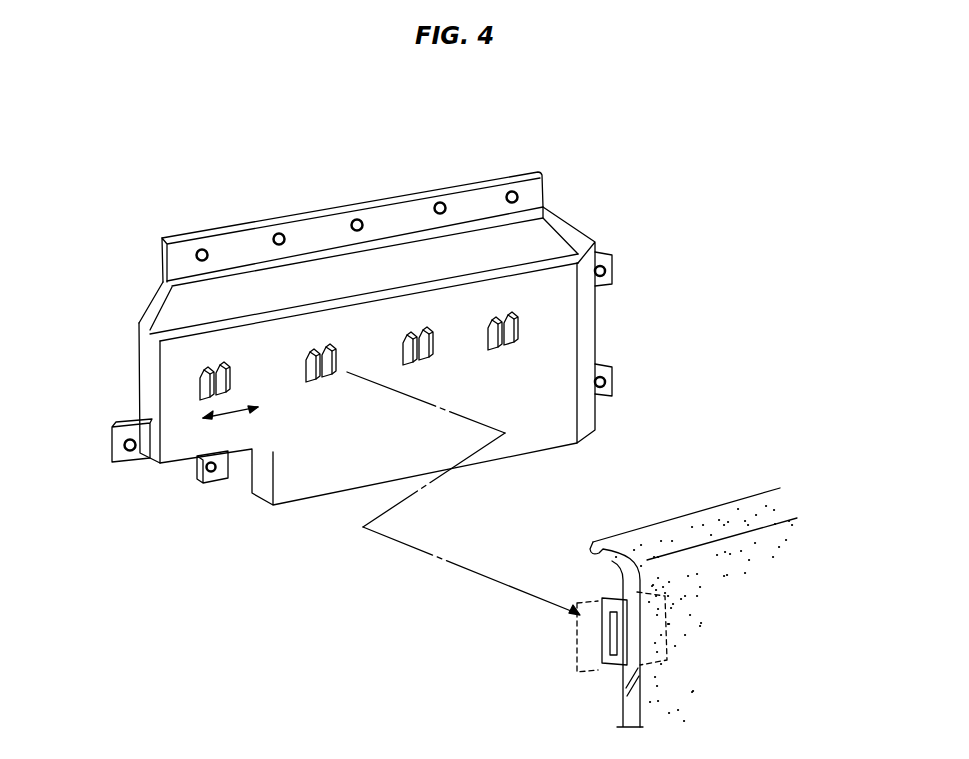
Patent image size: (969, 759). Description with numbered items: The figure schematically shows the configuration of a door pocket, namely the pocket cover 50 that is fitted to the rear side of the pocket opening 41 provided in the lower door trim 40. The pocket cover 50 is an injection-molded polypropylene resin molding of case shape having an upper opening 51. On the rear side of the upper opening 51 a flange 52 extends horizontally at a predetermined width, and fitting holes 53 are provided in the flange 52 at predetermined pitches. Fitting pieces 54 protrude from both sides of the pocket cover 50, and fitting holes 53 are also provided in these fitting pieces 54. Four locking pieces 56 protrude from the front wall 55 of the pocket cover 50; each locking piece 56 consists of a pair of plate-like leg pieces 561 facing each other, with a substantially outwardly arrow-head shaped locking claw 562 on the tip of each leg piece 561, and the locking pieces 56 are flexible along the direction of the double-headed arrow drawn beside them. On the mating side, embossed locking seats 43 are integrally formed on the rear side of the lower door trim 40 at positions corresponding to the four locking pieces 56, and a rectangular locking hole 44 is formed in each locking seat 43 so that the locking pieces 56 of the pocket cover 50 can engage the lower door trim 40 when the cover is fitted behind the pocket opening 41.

The lower door trim 40 is at (710, 603).
The pocket opening 41 is at (663, 501).
The locking seat 43 is at (637, 585).
The locking hole 44 is at (598, 635).
The pocket cover 50 is at (246, 513).
The upper opening 51 is at (396, 280).
The flange 52 is at (318, 232).
The fitting hole 53 is at (441, 198).
The fitting piece 54 is at (612, 260).
The front wall 55 is at (411, 426).
The locking piece 56 is at (324, 398).
The leg piece 561 is at (306, 356).
The locking claw 562 is at (337, 362).